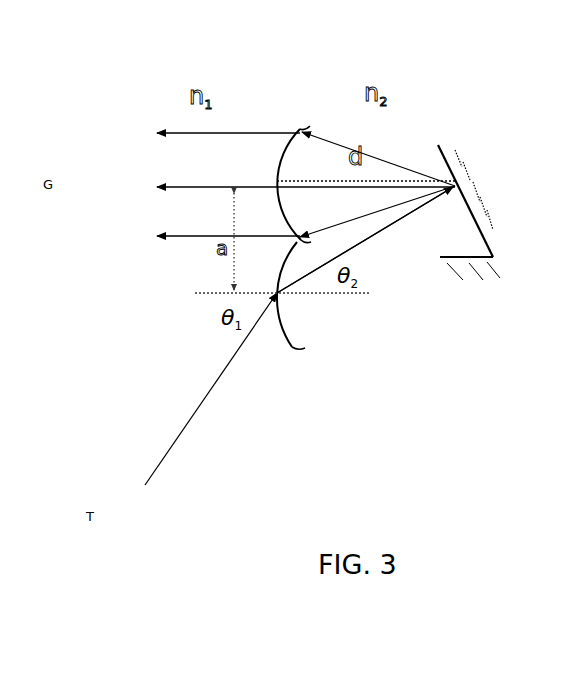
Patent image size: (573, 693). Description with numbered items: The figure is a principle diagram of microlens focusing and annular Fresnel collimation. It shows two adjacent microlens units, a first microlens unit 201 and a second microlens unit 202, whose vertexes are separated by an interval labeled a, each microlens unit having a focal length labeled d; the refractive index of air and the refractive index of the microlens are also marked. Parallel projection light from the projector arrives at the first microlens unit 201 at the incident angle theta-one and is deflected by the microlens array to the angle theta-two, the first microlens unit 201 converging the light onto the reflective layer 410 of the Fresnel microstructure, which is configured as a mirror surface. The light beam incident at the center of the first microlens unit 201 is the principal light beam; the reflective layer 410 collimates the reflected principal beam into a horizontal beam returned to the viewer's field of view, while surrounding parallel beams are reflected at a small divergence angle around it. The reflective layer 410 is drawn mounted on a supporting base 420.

The first microlens unit 201 is at (291, 343).
The second microlens unit 202 is at (303, 131).
The reflective layer 410 is at (490, 201).
The mirror base 420 is at (470, 288).